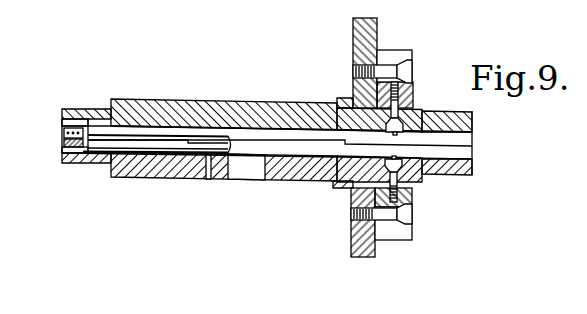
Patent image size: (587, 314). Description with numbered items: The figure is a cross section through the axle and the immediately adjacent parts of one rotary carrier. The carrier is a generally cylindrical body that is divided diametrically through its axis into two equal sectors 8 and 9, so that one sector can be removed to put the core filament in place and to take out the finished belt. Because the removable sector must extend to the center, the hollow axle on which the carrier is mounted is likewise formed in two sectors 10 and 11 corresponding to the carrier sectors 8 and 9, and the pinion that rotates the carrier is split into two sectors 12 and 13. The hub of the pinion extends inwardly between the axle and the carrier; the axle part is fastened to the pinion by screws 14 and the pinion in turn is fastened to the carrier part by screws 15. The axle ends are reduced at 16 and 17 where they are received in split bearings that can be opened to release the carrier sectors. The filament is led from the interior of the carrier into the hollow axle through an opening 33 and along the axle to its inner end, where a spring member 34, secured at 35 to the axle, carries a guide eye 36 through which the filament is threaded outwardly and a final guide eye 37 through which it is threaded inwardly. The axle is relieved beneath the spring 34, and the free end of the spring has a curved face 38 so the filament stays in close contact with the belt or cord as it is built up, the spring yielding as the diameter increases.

The carrier sector 8 is at (377, 33).
The carrier sector 9 is at (373, 251).
The axle sector 10 is at (274, 103).
The axle sector 11 is at (318, 173).
The pinion sector 12 is at (412, 97).
The pinion sector 13 is at (412, 193).
The screws 14 is at (418, 116).
The screws 15 is at (401, 65).
The reduced axle end 16 is at (82, 111).
The reduced axle end 17 is at (462, 174).
The opening 33 is at (253, 173).
The spring member 34 is at (105, 149).
The securing point of spring 35 is at (207, 175).
The guide eye 36 is at (85, 148).
The final guide eye 37 is at (63, 145).
The curved face 38 is at (65, 128).